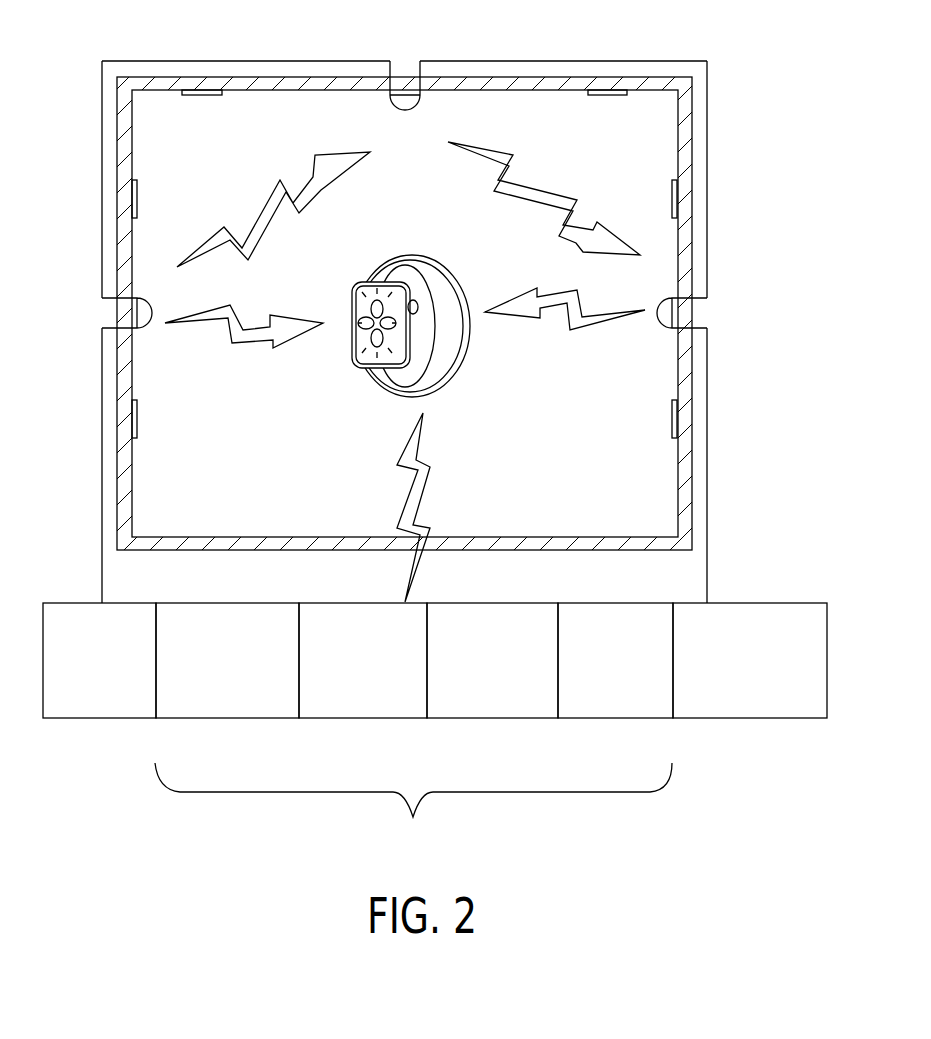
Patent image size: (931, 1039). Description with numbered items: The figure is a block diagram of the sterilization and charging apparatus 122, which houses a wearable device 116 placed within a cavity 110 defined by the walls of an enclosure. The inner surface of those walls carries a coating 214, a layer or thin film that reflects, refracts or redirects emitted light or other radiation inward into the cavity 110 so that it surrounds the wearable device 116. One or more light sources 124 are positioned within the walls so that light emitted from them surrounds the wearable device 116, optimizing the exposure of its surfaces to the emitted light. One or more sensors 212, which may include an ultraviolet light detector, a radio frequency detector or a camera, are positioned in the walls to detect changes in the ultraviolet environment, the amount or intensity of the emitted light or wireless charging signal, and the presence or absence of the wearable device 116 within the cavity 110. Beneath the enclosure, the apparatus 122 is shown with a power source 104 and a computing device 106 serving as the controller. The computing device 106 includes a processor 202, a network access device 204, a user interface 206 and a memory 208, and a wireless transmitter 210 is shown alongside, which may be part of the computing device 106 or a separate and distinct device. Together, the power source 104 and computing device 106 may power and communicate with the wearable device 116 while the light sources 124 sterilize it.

The sterilization and charging apparatus 122 is at (756, 95).
The coating 214 is at (120, 472).
The cavity 110 is at (627, 509).
The sensors 212 is at (200, 90).
The light sources 124 is at (703, 328).
The wearable device 116 is at (455, 388).
The power source 104 is at (103, 710).
The processor 202 is at (225, 707).
The network access device 204 is at (365, 707).
The user interface 206 is at (488, 705).
The memory 208 is at (617, 705).
The wireless transmitter 210 is at (745, 705).
The computing device 106 is at (413, 817).